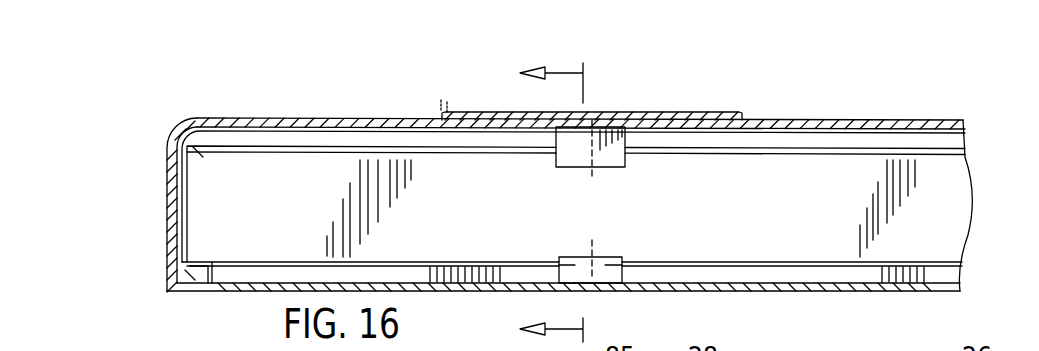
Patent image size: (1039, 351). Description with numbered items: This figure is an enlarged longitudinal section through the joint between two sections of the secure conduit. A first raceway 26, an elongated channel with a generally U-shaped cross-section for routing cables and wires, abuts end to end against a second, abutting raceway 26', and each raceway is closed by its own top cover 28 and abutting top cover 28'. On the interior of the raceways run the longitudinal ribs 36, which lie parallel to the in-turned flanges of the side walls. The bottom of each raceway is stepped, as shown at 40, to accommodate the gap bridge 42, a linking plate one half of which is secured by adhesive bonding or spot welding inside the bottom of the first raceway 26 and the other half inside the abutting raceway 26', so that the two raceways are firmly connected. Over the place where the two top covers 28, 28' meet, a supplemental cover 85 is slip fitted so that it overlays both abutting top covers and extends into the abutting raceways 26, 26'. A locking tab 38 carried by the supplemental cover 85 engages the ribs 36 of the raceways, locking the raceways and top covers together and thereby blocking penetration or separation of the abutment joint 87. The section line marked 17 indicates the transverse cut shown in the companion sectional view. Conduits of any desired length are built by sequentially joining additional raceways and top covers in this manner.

The section line 17- 17 is at (533, 202).
The raceway 26 is at (563, 308).
The abutting raceway 26' is at (203, 299).
The top cover 28 is at (584, 188).
The abutting top cover 28' is at (267, 186).
The longitudinal rib 36 is at (483, 152).
The locking tab 38 is at (570, 148).
The stepped bottom 40 is at (435, 265).
The gap bridge 42 is at (605, 258).
The supplemental cover 85 is at (668, 113).
The abutment joint 87 is at (593, 290).